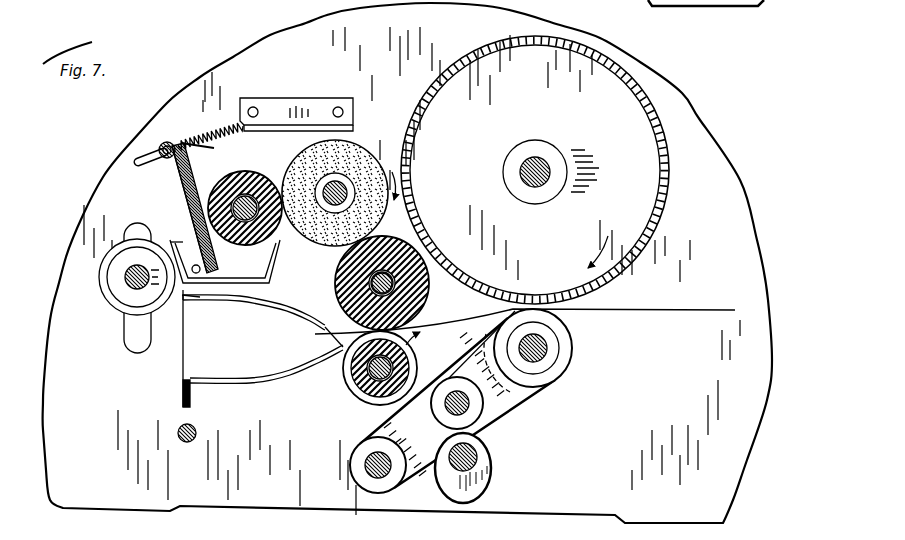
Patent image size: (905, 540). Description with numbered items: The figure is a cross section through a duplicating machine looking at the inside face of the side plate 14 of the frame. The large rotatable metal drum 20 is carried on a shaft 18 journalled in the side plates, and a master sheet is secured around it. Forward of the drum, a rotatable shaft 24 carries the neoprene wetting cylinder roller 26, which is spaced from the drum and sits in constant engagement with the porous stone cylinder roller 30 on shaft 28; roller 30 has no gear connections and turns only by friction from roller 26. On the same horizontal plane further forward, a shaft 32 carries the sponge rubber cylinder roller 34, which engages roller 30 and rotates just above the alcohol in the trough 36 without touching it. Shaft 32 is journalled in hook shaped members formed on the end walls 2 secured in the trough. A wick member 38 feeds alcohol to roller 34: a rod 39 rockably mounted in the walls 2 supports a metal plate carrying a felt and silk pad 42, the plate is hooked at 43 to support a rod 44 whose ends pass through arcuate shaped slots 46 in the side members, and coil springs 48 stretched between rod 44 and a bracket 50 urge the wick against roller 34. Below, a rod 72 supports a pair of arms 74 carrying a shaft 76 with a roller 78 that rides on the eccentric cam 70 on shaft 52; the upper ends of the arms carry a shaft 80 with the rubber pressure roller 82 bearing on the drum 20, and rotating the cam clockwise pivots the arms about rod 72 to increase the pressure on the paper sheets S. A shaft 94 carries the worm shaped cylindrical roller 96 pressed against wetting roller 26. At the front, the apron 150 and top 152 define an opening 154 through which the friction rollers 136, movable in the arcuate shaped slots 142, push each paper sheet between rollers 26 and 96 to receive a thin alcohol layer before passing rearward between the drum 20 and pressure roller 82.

The side plate 14 is at (268, 36).
The shaft 18 is at (546, 160).
The rotatable metal drum 20 is at (655, 116).
The rotatable shaft 24 is at (371, 288).
The cylinder roller 26 is at (429, 298).
The shaft 28 is at (343, 188).
The cylinder roller 30 is at (383, 140).
The shaft 32 is at (259, 174).
The sponge rubber cylinder roller 34 is at (225, 261).
The trough 36 is at (281, 268).
The wick member 38 is at (168, 183).
The rod 39 is at (185, 281).
The pad 42 is at (183, 188).
The hook 43 is at (170, 143).
The rod 44 is at (160, 147).
The arcuate shaped slots 46 is at (136, 162).
The coil springs 48 is at (244, 124).
The bracket 50 is at (312, 112).
The shaft 52 is at (463, 472).
The cam 70 is at (482, 487).
The rod 72 is at (370, 466).
The arms 74 is at (423, 471).
The shaft 76 is at (462, 398).
The roller 78 is at (473, 418).
The shaft 80 is at (557, 373).
The pressure roller 82 is at (562, 334).
The shaft 94 is at (362, 396).
The worm shaped cylindrical roller 96 is at (352, 362).
The friction rollers 136 is at (125, 280).
The arcuate shaped slots 142 is at (127, 335).
The apron 150 is at (247, 378).
The top 152 is at (262, 301).
The opening 154 is at (344, 347).
The paper sheets S is at (655, 311).
The end walls 2 is at (183, 241).